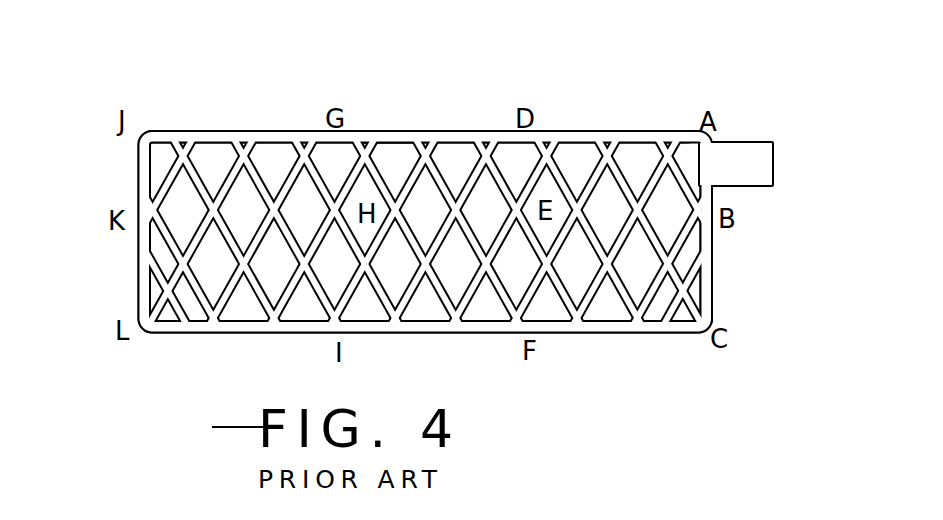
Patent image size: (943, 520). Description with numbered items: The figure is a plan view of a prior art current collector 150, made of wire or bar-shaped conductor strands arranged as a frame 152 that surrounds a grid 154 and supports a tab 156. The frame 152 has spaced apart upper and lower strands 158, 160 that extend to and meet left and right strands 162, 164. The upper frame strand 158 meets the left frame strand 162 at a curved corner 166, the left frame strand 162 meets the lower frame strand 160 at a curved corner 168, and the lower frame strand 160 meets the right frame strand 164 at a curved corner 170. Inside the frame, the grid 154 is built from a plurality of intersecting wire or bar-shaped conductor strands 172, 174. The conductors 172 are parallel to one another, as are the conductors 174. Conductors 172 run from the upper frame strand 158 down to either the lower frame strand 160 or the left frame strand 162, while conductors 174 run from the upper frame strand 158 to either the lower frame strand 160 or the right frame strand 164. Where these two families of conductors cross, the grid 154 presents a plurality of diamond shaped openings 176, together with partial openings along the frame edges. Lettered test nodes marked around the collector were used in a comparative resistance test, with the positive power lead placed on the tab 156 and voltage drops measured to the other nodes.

The current collector 150 is at (438, 209).
The frame 152 is at (400, 131).
The grid 154 is at (510, 172).
The tab 156 is at (757, 152).
The upper frame strand 158 is at (207, 131).
The lower frame strand 160 is at (243, 333).
The left frame strand 162 is at (137, 265).
The right frame strand 164 is at (712, 268).
The curved corner 166 is at (150, 152).
The curved corner 168 is at (153, 333).
The curved corner 170 is at (705, 318).
The conductor strands 172 is at (242, 182).
The conductor strands 174 is at (493, 300).
The diamond shaped openings 176 is at (607, 208).